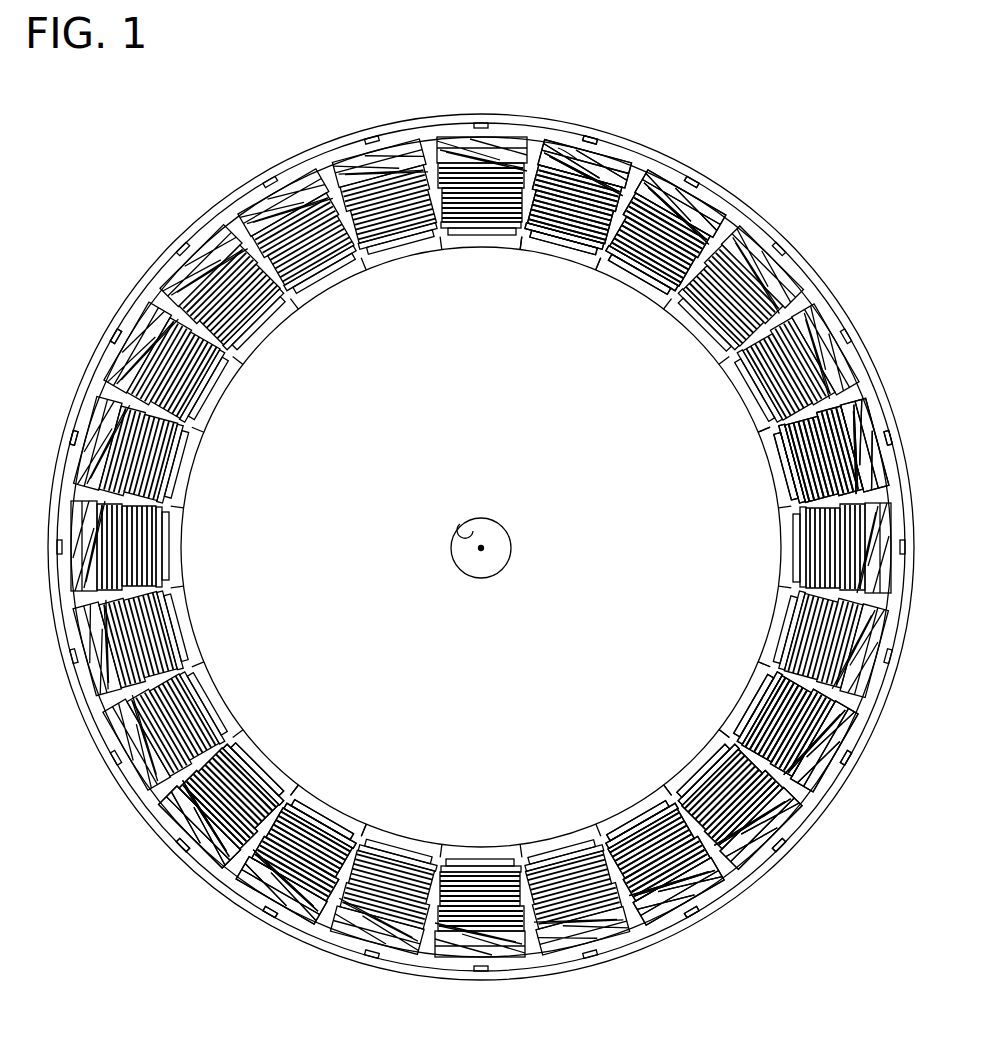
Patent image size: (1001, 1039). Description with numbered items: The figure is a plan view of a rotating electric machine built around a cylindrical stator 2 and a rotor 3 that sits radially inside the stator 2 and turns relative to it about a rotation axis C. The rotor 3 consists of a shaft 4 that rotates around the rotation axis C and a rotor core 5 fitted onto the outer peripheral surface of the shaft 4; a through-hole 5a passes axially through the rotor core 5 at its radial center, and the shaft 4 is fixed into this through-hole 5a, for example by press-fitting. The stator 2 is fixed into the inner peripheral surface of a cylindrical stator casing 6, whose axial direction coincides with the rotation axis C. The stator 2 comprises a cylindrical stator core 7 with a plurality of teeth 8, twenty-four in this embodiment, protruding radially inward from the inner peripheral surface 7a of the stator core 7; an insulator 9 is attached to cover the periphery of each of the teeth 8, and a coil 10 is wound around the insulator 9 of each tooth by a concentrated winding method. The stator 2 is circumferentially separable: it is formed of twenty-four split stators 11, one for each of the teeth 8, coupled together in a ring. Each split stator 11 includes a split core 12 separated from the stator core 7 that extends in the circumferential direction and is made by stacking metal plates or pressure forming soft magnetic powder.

The stator 2 is at (812, 266).
The rotor 3 is at (755, 385).
The shaft 4 is at (495, 578).
The rotor core 5 is at (747, 703).
The through-hole 5a is at (462, 528).
The stator casing 6 is at (768, 222).
The stator core 7 is at (714, 190).
The inner peripheral surface 7a is at (665, 185).
The teeth 8 is at (556, 245).
The insulator 9 is at (565, 153).
The coil 10 is at (830, 457).
The split stator 11 is at (116, 306).
The split core 12 is at (713, 895).
The rotation axis C is at (481, 548).